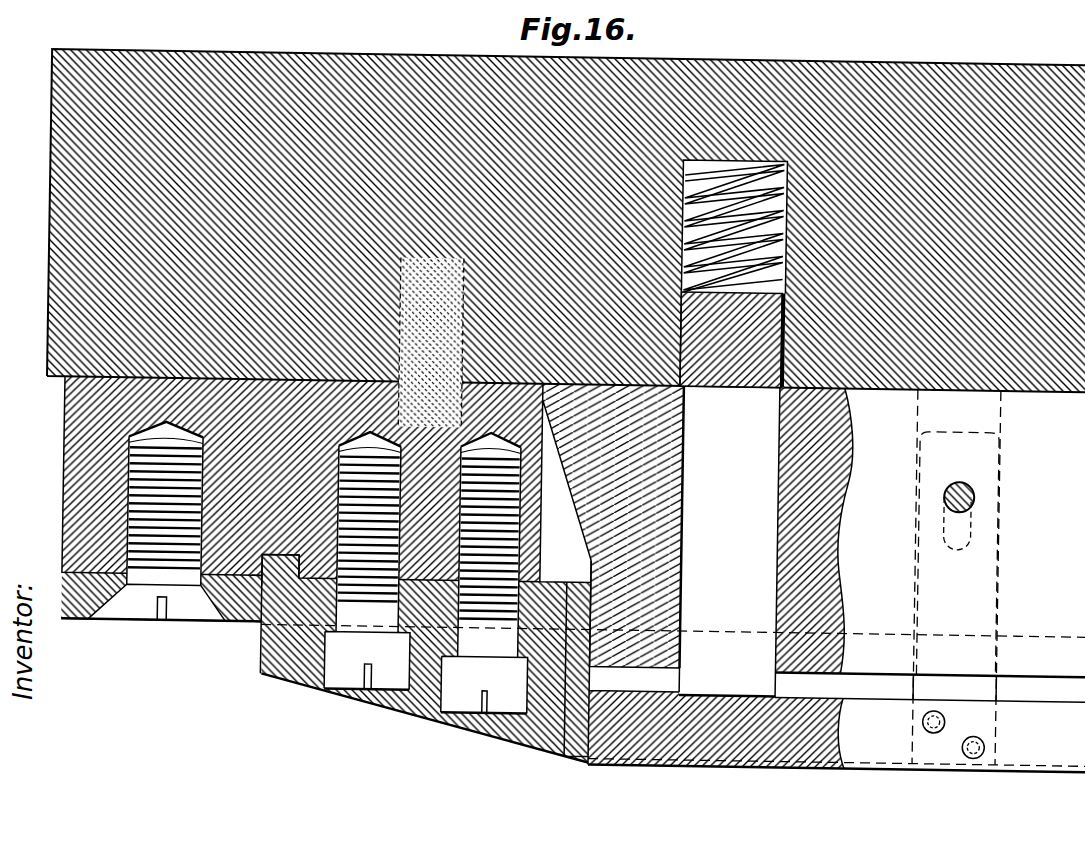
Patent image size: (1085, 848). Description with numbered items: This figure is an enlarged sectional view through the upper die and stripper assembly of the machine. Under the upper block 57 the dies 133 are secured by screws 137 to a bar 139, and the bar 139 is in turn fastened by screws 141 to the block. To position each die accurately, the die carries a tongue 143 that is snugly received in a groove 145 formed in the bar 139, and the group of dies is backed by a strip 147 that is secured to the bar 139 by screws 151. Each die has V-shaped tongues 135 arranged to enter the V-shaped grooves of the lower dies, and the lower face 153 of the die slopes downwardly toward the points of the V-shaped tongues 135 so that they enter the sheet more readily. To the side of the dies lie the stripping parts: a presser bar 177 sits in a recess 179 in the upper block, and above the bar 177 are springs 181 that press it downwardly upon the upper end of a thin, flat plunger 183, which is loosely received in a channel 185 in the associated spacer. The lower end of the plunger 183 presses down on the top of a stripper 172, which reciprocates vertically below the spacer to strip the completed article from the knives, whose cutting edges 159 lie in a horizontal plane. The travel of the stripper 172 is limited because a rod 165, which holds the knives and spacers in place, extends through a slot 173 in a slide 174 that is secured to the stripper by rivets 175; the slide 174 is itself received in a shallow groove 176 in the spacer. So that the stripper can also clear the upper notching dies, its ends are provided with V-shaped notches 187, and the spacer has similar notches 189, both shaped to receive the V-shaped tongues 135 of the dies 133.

The upper block 57 is at (62, 146).
The springs 181 is at (778, 231).
The recess 179 is at (785, 291).
The presser bar 177 is at (775, 336).
The bar 139 is at (66, 440).
The screws 141 is at (553, 460).
The notches 189 is at (593, 517).
The plungers 183 is at (764, 507).
The channels 185 is at (779, 605).
The rods 165 is at (965, 470).
The slots 173 is at (974, 513).
The shallow grooves 176 is at (1001, 583).
The tongue 143 is at (285, 553).
The groove 145 is at (266, 556).
The strip 147 is at (86, 604).
The screws 151 is at (147, 603).
The dies 133 is at (295, 660).
The screws 137 is at (364, 680).
The lower face 153 is at (430, 706).
The V-shaped tongues 135 is at (583, 755).
The V-shaped notches 187 is at (600, 709).
The strippers 172 is at (822, 752).
The slides 174 is at (997, 673).
The rivets 175 is at (927, 708).
The cutting edges 159 is at (909, 750).